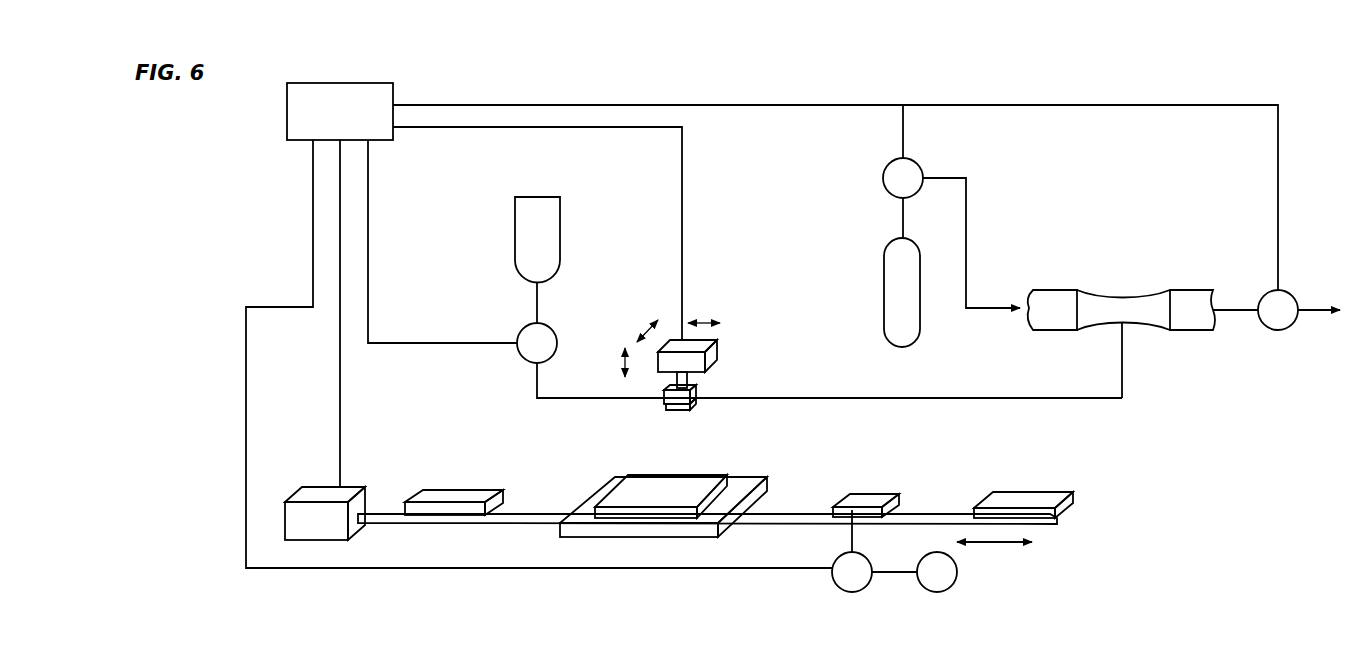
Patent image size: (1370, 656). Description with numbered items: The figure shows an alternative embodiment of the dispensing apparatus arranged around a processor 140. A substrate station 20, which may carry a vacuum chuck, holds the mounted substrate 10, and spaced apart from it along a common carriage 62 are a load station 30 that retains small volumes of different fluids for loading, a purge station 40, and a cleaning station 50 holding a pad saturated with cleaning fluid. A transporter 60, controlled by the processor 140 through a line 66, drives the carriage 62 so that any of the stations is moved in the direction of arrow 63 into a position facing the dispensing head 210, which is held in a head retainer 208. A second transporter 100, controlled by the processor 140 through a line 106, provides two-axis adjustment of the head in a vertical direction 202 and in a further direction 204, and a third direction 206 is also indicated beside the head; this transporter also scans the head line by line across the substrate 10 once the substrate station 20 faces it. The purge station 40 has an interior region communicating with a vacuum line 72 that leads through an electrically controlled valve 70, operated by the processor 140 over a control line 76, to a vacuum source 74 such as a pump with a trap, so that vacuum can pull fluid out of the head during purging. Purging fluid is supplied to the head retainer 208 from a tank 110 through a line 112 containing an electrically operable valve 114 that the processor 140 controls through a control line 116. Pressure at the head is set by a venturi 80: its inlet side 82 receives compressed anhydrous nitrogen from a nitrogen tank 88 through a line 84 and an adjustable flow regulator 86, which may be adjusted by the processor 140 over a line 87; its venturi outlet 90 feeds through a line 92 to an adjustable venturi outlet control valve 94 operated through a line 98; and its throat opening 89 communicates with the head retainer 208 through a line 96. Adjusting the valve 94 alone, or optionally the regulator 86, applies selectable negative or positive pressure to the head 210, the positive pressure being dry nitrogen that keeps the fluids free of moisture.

The substrate 10 is at (655, 492).
The substrate station 20 is at (663, 542).
The load station 30 is at (482, 488).
The purge station 40 is at (870, 490).
The cleaning station 50 is at (1029, 489).
The transporter 60 is at (334, 550).
The carriage 62 is at (522, 523).
The arrow 63 is at (998, 545).
The line 66 is at (340, 467).
The electrically controlled valve 70 is at (854, 589).
The vacuum line 72 is at (852, 540).
The vacuum source 74 is at (934, 592).
The control line 76 is at (760, 572).
The venturi 80 is at (1098, 286).
The inlet side 82 is at (1046, 290).
The line 84 is at (950, 175).
The adjustable flow regulator 86 is at (883, 171).
The line 87 is at (903, 131).
The nitrogen tank 88 is at (891, 290).
The throat opening 89 is at (1126, 330).
The venturi outlet 90 is at (1191, 288).
The line 92 is at (1198, 320).
The adjustable venturi outlet control valve 94 is at (1282, 327).
The line 96 is at (1306, 304).
The line 98 is at (1278, 145).
The second transporter 100 is at (710, 352).
The line 106 is at (682, 274).
The tank 110 is at (515, 245).
The line 112 is at (537, 301).
The electrically operable valve 114 is at (525, 362).
The control line 116 is at (442, 343).
The processor 140 is at (357, 120).
The vertical direction 202 is at (623, 365).
The direction 204 is at (640, 327).
The horizontal movement direction 206 is at (698, 323).
The head retainer 208 is at (692, 395).
The dispensing head 210 is at (694, 410).